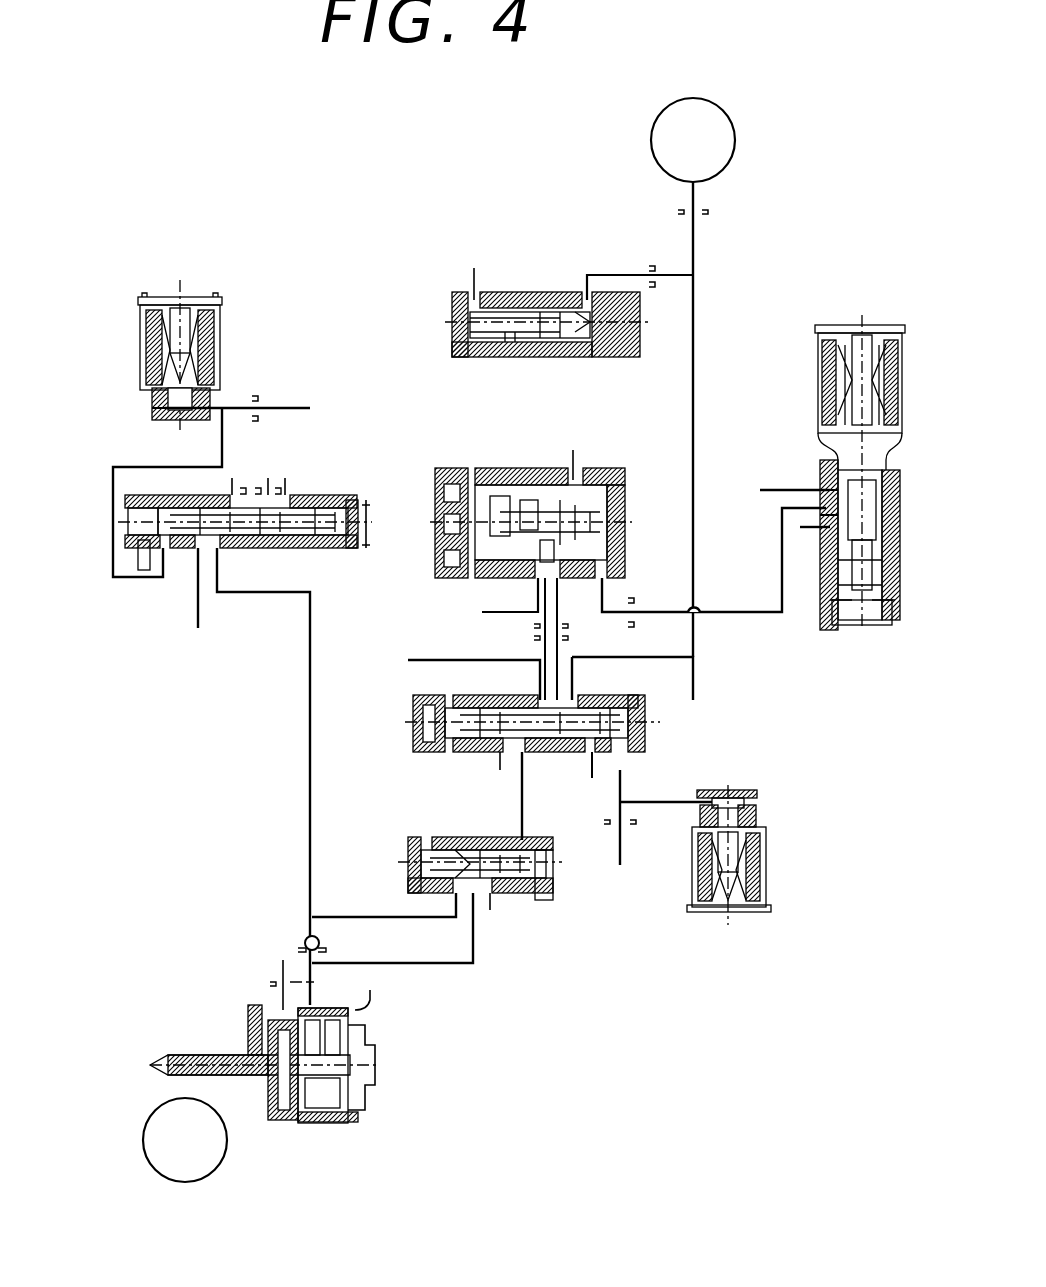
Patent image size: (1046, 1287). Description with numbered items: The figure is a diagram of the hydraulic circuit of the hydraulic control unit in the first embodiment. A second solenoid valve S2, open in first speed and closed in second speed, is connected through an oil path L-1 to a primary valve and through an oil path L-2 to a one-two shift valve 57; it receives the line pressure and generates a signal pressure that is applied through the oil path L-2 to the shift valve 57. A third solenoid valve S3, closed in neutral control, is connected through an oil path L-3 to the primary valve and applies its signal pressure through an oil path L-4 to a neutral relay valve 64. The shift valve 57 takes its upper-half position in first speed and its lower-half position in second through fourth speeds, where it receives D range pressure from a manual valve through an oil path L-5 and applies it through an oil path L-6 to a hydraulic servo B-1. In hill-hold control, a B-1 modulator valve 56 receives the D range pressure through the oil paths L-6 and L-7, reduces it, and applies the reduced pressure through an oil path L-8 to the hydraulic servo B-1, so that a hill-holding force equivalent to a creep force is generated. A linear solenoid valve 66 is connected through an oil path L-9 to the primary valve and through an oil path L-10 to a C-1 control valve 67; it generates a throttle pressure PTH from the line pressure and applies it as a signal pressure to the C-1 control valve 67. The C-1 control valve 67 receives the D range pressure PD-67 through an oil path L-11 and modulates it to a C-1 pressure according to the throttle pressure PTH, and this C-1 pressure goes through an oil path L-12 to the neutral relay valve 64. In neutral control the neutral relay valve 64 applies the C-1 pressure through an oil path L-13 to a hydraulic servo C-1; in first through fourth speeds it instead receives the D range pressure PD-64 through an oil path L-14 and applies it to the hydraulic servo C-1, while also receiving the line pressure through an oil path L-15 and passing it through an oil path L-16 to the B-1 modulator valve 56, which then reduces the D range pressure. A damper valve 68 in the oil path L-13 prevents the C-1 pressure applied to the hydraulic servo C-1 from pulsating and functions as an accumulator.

The B-1 modulator valve 56 is at (442, 840).
The 1-2 shift valve 57 is at (325, 496).
The neutral relay valve 64 is at (692, 700).
The linear solenoid valve 66 is at (818, 355).
The C-1 control valve 67 is at (619, 478).
The damper valve 68 is at (539, 284).
The hydraulic servo C-1 is at (693, 140).
The hydraulic servo B-1 is at (261, 1071).
The second solenoid valve S2 is at (180, 341).
The third solenoid valve S3 is at (729, 838).
The oil path L-1 is at (280, 408).
The oil path L-2 is at (112, 530).
The oil path L-3 is at (622, 850).
The oil path L-4 is at (623, 770).
The oil path L-5 is at (197, 596).
The oil path L-6 is at (312, 822).
The oil path L-7 is at (404, 920).
The oil path L-8 is at (460, 965).
The oil path L-9 is at (784, 489).
The oil path L-10 is at (767, 610).
The oil path L-11 is at (511, 639).
The oil path L-12 is at (714, 582).
The oil path L-13 is at (694, 304).
The oil path L-14 is at (588, 768).
The oil path L-15 is at (412, 660).
The oil path L-16 is at (520, 797).
The throttle pressure PTH is at (724, 592).
The D range pressure PD-67 is at (492, 603).
The D range pressure PD-64 is at (601, 779).